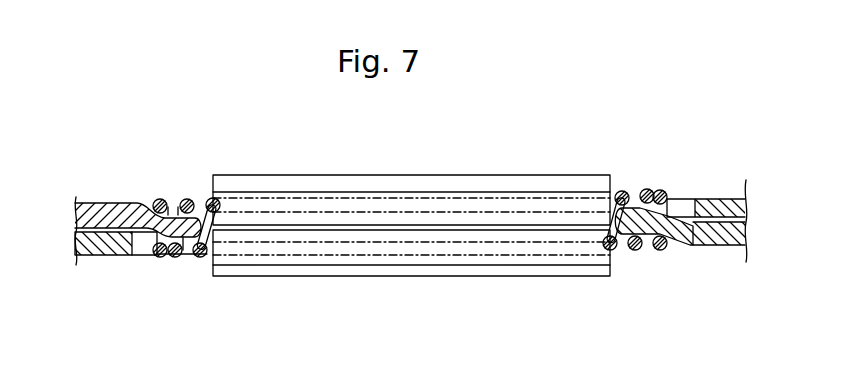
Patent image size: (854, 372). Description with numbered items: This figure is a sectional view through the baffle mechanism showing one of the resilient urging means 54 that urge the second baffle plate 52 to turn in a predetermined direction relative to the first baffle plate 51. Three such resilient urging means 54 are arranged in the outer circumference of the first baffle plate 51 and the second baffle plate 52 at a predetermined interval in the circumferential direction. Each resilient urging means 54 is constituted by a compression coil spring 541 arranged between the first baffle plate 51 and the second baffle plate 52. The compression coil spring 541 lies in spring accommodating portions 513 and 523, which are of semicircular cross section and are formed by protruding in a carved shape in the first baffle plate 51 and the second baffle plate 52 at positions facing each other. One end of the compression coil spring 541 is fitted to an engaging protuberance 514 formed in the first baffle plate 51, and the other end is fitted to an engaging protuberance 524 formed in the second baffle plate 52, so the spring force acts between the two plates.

The first baffle plate 51 is at (731, 245).
The second baffle plate 52 is at (102, 210).
The resilient urging means 54 is at (647, 180).
The compression coil spring 541 is at (185, 199).
The spring accommodating portion 513 is at (500, 276).
The engaging protuberance 514 is at (648, 228).
The spring accommodating portion 523 is at (485, 175).
The engaging protuberance 524 is at (188, 247).